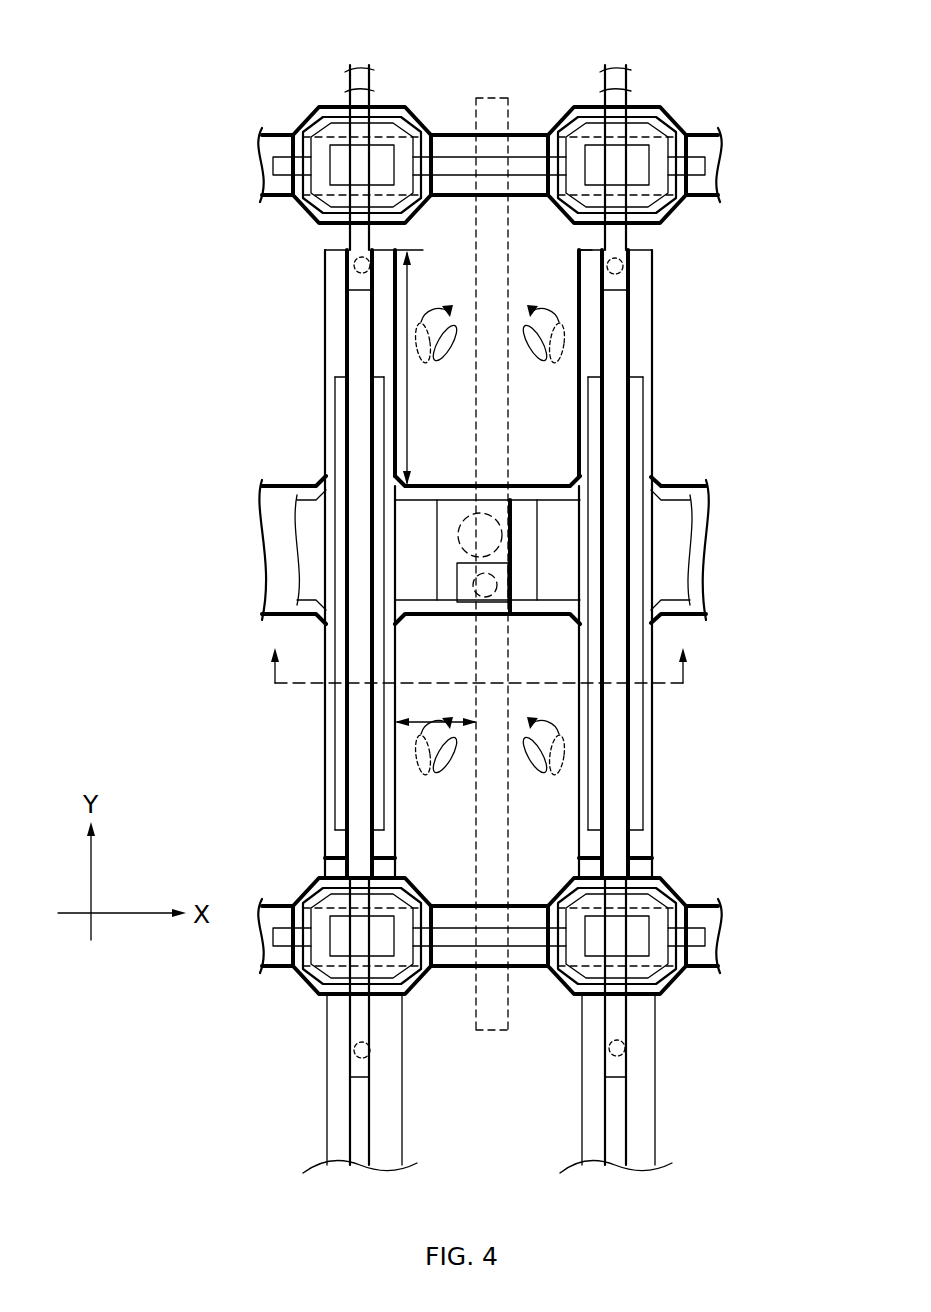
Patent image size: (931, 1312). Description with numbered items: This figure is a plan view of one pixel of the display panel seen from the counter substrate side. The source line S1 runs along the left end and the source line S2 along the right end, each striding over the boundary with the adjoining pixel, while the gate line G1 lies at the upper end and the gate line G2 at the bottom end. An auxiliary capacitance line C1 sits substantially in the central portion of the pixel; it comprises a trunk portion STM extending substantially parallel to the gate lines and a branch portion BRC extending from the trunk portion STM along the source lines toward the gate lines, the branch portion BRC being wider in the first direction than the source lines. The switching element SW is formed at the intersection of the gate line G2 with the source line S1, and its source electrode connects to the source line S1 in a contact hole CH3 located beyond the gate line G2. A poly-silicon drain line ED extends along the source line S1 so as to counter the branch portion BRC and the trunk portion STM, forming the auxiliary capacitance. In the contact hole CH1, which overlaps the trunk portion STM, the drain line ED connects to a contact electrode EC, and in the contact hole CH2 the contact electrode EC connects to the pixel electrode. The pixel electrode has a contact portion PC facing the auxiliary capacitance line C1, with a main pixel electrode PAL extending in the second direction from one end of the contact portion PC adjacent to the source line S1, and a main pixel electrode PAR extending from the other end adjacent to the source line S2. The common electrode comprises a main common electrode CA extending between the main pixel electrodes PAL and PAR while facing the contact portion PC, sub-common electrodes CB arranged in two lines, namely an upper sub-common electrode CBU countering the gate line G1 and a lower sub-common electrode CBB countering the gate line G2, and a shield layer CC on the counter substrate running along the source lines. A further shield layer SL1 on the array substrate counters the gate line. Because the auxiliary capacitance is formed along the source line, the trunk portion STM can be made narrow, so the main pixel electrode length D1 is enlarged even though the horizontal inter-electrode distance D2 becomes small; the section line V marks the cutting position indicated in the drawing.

The shield layer SL1 is at (668, 121).
The gate line G1 is at (489, 546).
The gate line G2 is at (428, 949).
The sub-common electrode CBU is at (393, 107).
The sub-common electrode CBB is at (593, 992).
The sub-common electrode CB is at (443, 546).
The shield layer CC is at (492, 563).
The source line S1 is at (360, 330).
The source line S2 is at (620, 331).
The main pixel electrode PAL is at (383, 249).
The main pixel electrode PAR is at (580, 257).
The contact hole CH3 is at (353, 264).
The branch portion BRC is at (335, 393).
The trunk portion STM is at (457, 522).
The auxiliary capacitance line C1 is at (275, 512).
The drain line ED is at (340, 745).
The contact portion PC is at (490, 553).
The contact hole CH1 is at (497, 513).
The contact hole CH2 is at (482, 597).
The contact electrode EC is at (526, 600).
The main common electrode CA is at (500, 394).
The main pixel electrode length D1 is at (424, 368).
The horizontal inter-electrode distance D2 is at (436, 710).
The section line V- V is at (483, 663).
The switching element SW is at (241, 941).